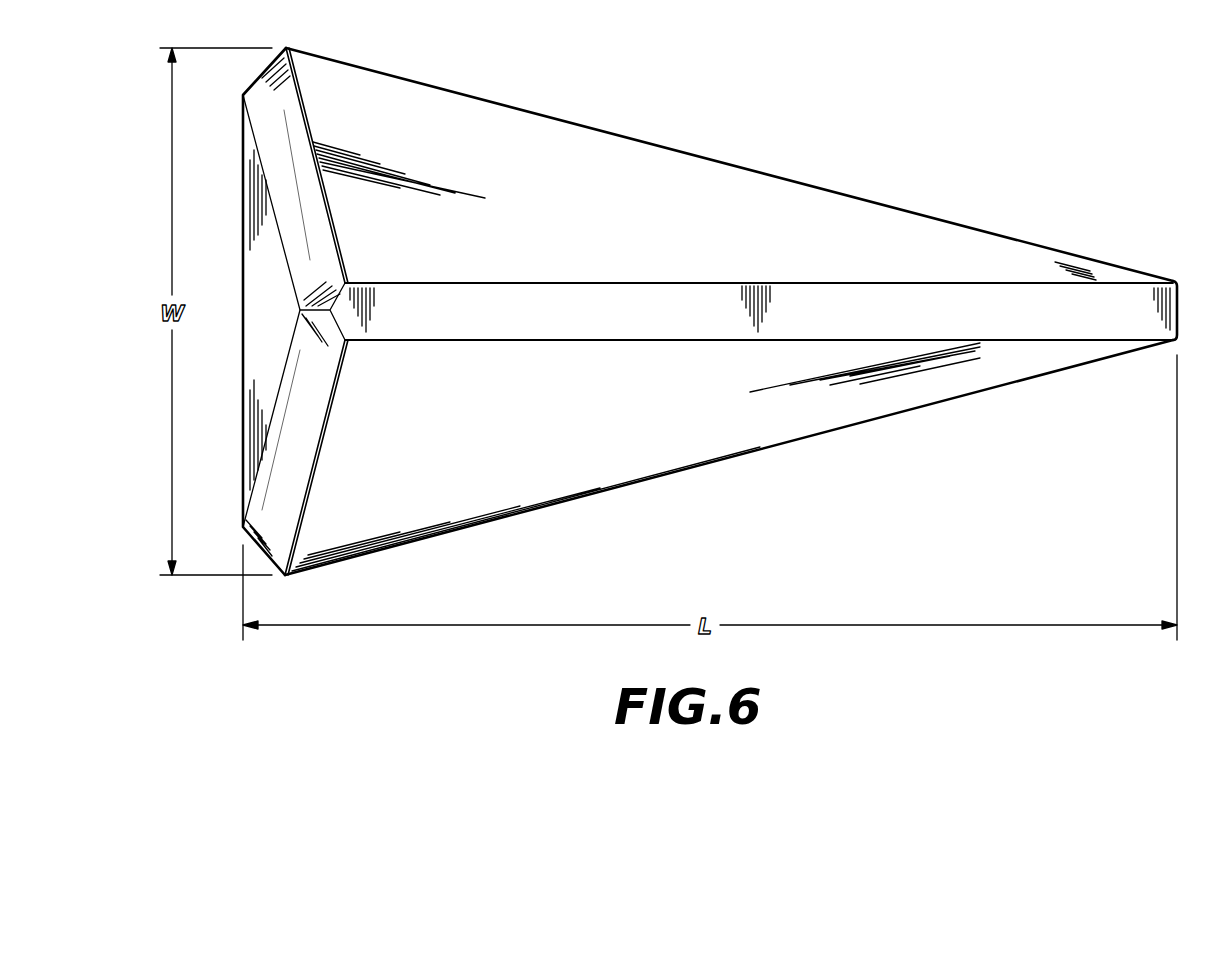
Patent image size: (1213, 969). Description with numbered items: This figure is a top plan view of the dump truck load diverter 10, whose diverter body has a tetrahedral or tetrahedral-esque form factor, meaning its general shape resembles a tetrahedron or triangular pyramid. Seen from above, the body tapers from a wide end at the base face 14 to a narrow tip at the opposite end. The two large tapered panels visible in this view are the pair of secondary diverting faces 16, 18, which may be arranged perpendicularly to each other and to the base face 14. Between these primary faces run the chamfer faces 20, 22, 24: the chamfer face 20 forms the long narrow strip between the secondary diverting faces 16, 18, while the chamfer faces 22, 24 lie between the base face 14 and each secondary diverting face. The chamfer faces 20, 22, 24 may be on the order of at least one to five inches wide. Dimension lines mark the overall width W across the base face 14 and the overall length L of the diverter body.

The dump truck load diverter 10 is at (710, 309).
The base face 14 is at (274, 337).
The secondary diverting face 16 is at (530, 433).
The secondary diverting face 18 is at (616, 219).
The chamfer face 20 is at (596, 326).
The chamfer face 22 is at (298, 190).
The chamfer face 24 is at (302, 445).